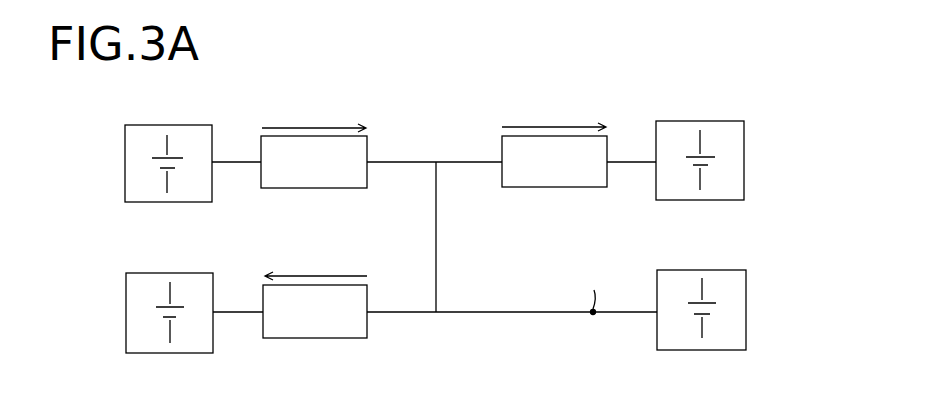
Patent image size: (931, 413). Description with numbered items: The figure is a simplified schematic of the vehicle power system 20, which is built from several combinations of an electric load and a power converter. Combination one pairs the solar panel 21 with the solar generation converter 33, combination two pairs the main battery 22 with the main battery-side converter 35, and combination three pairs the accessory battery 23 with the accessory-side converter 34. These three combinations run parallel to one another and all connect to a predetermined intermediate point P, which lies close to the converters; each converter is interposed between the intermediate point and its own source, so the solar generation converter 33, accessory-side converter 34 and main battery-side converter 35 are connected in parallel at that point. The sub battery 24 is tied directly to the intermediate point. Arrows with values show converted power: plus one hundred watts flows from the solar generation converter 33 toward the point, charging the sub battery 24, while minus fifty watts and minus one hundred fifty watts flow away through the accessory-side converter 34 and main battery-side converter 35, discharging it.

The vehicle power system 20 is at (806, 80).
The solar panel 21 is at (197, 124).
The main battery 22 is at (727, 121).
The accessory battery 23 is at (197, 273).
The sub battery 24 is at (728, 270).
The solar generation converter 33 is at (354, 189).
The accessory-side converter 34 is at (357, 339).
The main battery-side converter 35 is at (593, 188).